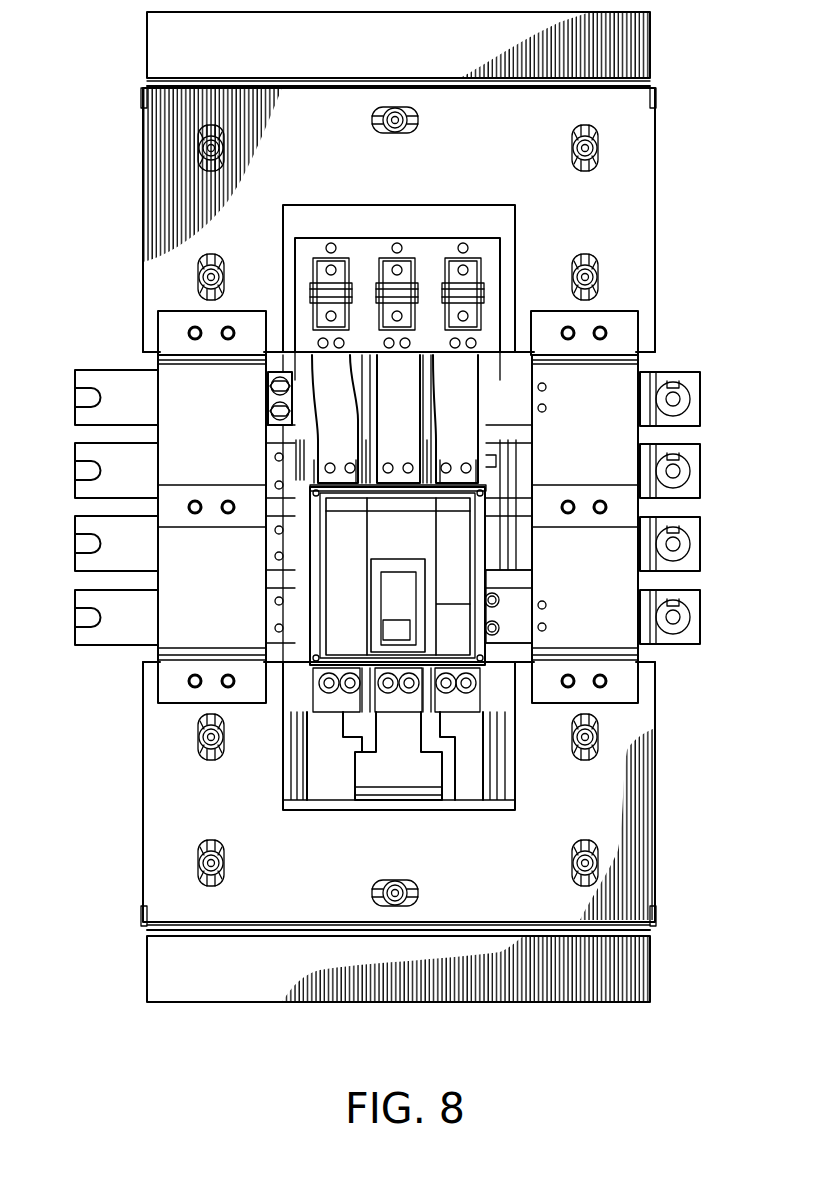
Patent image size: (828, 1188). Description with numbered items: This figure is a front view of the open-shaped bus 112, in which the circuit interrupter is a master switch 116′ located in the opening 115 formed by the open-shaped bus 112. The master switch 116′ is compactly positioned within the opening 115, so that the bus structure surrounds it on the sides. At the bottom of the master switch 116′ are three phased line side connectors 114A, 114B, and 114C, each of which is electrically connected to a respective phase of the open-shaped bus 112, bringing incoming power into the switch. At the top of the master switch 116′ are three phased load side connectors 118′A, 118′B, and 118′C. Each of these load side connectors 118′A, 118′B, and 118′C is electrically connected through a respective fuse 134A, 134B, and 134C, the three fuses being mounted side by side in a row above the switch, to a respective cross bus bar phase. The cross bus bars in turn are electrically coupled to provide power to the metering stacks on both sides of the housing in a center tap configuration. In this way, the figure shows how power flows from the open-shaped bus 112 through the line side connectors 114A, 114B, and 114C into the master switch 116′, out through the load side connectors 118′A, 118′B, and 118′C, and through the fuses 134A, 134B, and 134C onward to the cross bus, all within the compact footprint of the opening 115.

The open-shaped bus 112 is at (162, 798).
The opening 115 is at (488, 221).
The fuse 134A is at (328, 262).
The fuse 134B is at (394, 262).
The fuse 134C is at (460, 262).
The load side connector 118′A is at (335, 437).
The load side connector 118′B is at (393, 402).
The load side connector 118′C is at (460, 435).
The master switch 116′ is at (397, 625).
The line side connector 114A is at (323, 782).
The line side connector 114B is at (395, 763).
The line side connector 114C is at (468, 782).